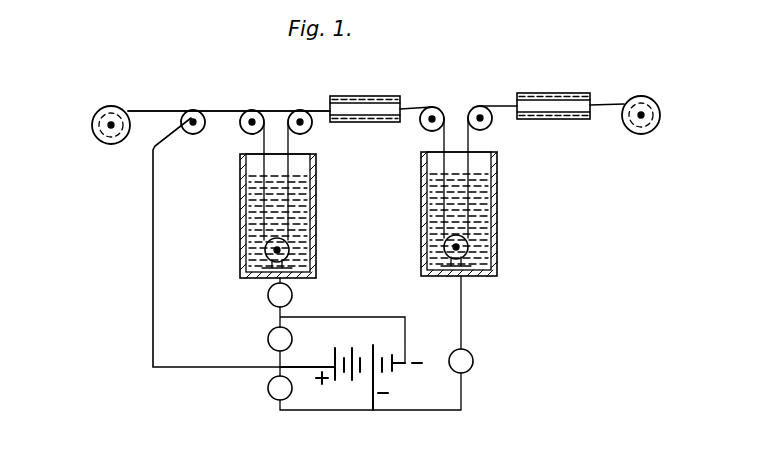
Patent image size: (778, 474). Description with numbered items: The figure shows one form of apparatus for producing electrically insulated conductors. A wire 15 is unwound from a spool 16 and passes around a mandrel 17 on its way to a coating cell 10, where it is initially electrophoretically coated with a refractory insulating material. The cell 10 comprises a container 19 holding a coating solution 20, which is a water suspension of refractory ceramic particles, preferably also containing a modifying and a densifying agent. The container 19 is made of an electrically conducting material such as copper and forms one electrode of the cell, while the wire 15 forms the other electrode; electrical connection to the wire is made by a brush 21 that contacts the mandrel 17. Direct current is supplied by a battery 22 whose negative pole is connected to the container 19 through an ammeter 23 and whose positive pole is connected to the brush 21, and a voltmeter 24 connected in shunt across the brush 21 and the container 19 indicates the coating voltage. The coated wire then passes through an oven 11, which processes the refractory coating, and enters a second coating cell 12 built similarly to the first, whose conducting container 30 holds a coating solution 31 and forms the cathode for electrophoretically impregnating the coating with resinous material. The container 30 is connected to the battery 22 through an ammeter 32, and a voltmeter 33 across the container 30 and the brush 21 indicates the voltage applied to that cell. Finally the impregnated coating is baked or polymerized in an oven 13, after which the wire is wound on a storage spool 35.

The coating cell 10 is at (243, 238).
The oven 11 is at (355, 97).
The coating cell 12 is at (497, 233).
The oven 13 is at (560, 95).
The wire 15 is at (216, 111).
The spool 16 is at (93, 133).
The mandrel 17 is at (188, 134).
The container 19 is at (315, 258).
The coating solution 20 is at (299, 192).
The brush 21 is at (160, 137).
The battery 22 is at (344, 394).
The ammeter 23 is at (268, 296).
The voltmeter 24 is at (268, 339).
The container 30 is at (497, 266).
The coating solution 31 is at (480, 188).
The ammeter 32 is at (474, 361).
The voltmeter 33 is at (270, 397).
The storage spool 35 is at (661, 115).